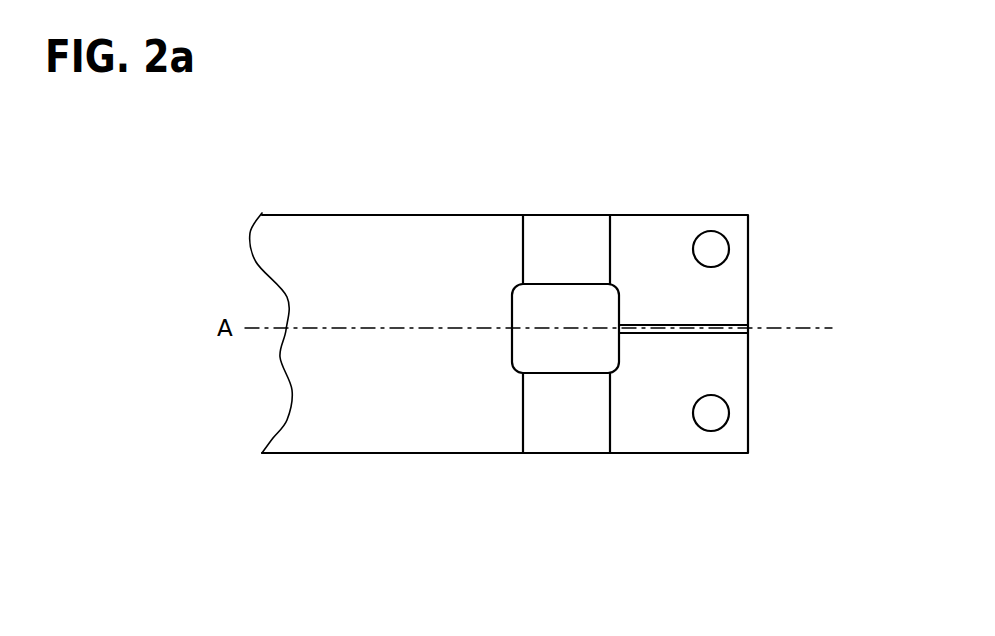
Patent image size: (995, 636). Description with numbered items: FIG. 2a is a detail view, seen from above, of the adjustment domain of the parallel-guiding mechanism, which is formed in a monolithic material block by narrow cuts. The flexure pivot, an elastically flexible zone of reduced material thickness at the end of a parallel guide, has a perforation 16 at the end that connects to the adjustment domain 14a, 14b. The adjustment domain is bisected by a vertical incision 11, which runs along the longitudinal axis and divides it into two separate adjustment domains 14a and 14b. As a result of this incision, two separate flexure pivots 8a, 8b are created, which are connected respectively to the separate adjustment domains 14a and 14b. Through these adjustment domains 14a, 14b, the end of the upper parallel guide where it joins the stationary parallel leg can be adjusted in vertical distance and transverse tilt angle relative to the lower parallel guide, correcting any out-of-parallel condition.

The flexure pivot 8a is at (560, 420).
The flexure pivot 8b is at (555, 250).
The vertical incision 11 is at (645, 325).
The adjustment domain 14a is at (710, 368).
The adjustment domain 14b is at (684, 297).
The perforation 16 is at (532, 316).